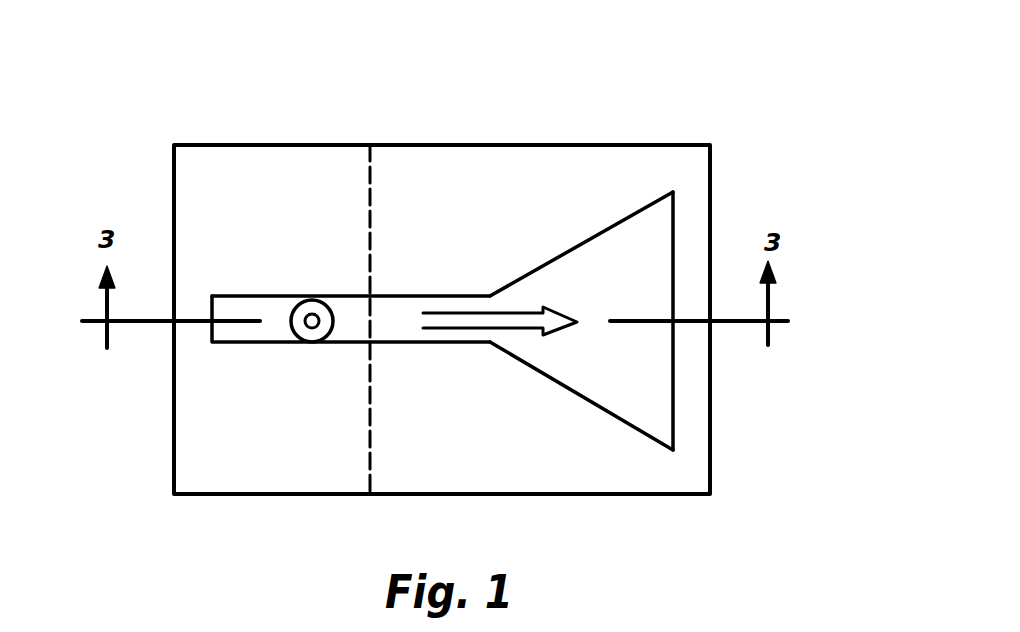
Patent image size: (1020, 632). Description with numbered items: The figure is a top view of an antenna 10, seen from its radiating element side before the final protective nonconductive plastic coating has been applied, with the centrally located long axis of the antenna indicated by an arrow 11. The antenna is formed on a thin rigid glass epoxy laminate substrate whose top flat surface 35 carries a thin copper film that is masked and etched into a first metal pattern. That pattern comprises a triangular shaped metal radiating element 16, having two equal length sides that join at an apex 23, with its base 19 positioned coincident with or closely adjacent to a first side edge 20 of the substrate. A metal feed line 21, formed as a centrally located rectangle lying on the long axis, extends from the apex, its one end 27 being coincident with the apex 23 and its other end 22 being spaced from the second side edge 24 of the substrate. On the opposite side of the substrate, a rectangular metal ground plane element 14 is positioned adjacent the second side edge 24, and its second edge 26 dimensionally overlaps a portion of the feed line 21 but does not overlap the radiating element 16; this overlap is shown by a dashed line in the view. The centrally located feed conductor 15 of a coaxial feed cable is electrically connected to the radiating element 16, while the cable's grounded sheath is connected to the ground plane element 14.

The antenna 10 is at (762, 88).
The arrow 11 is at (527, 316).
The ground plane element 14 is at (198, 437).
The feed conductor 15 is at (310, 342).
The radiating element 16 is at (655, 401).
The base 19 is at (673, 353).
The first side edge 20 is at (713, 222).
The feed line 21 is at (277, 297).
The other end of feed line 22 is at (212, 333).
The apex 23 is at (490, 272).
The second side edge 24 is at (174, 182).
The second edge 26 is at (365, 442).
The one end of feed line 27 is at (440, 302).
The top flat surface 35 is at (593, 160).